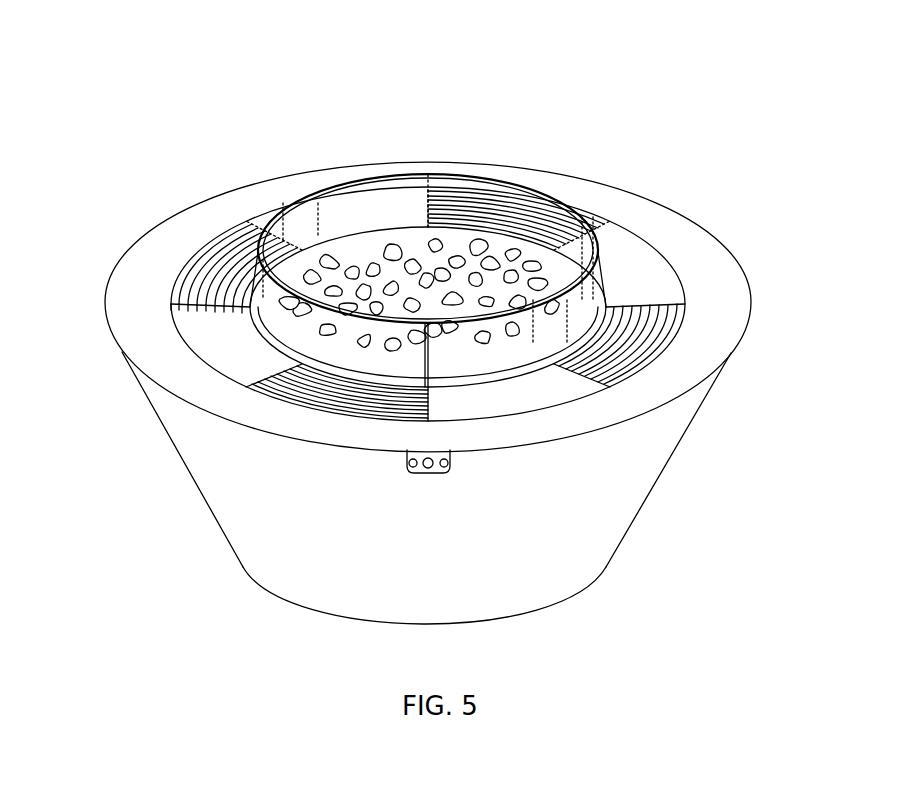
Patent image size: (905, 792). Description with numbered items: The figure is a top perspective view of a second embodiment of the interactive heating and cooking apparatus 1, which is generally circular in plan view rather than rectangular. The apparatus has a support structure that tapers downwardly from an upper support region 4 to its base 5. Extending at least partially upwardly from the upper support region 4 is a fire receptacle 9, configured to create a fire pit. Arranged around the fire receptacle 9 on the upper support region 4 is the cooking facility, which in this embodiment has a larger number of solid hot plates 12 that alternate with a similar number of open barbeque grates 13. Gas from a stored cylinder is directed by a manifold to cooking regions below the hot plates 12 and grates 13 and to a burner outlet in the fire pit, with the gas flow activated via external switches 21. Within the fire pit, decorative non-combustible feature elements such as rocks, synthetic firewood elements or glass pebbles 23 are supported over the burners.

The interactive heating and cooking apparatus 1 is at (652, 96).
The upper support region 4 is at (197, 230).
The base 5 is at (557, 602).
The fire receptacle 9 is at (554, 191).
The solid hot plates 12 is at (227, 347).
The open barbeque grates 13 is at (207, 267).
The external switches 21 is at (447, 471).
The glass pebbles 23 is at (373, 300).